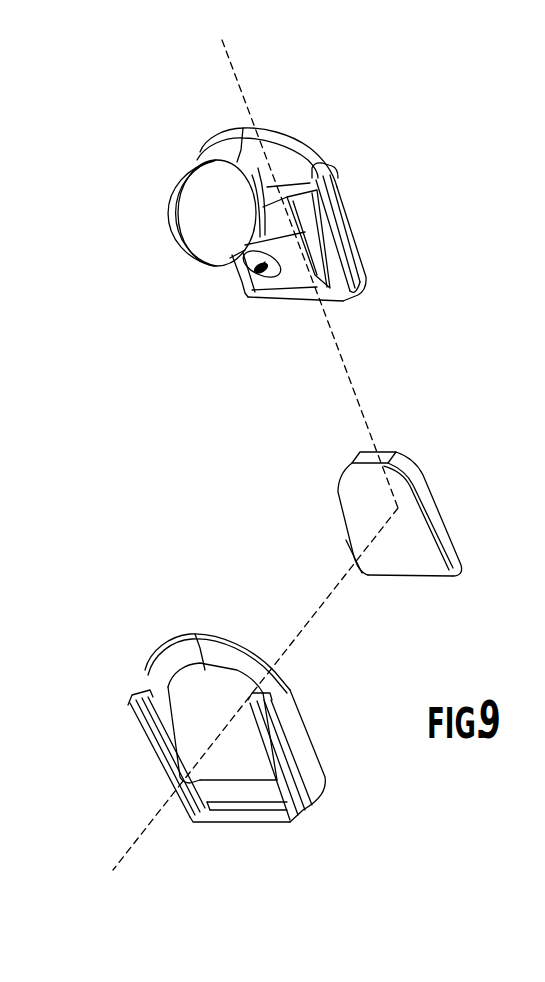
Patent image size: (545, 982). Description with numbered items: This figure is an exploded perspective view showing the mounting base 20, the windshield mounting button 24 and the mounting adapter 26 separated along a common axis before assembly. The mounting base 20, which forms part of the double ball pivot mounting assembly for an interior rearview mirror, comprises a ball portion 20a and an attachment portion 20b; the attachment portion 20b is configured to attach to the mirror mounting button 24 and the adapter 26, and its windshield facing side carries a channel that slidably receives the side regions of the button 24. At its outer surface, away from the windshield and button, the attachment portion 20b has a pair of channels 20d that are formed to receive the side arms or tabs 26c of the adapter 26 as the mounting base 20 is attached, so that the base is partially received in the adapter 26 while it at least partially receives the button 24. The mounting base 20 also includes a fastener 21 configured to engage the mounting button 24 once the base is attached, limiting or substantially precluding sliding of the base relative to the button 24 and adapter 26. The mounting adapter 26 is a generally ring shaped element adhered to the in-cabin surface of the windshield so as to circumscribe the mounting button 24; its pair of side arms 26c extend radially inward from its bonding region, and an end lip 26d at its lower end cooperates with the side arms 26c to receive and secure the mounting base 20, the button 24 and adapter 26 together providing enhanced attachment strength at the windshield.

The mounting base 20 is at (342, 134).
The ball portion 20a is at (163, 228).
The attachment portion 20b is at (360, 234).
The channels 20d is at (318, 196).
The fastener 21 is at (247, 298).
The mounting button 24 is at (435, 463).
The mounting adapter 26 is at (207, 624).
The side arms 26c is at (157, 733).
The end lip 26d is at (243, 825).